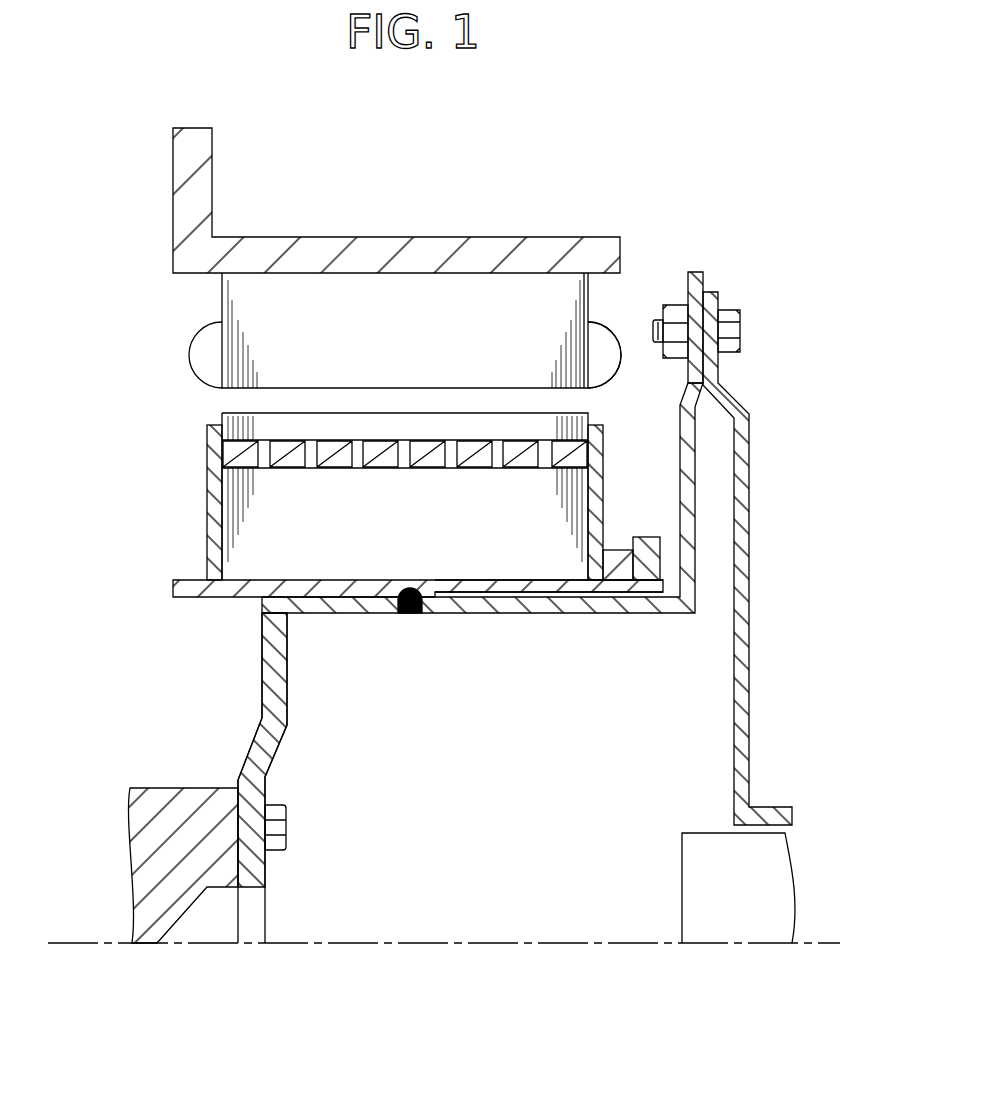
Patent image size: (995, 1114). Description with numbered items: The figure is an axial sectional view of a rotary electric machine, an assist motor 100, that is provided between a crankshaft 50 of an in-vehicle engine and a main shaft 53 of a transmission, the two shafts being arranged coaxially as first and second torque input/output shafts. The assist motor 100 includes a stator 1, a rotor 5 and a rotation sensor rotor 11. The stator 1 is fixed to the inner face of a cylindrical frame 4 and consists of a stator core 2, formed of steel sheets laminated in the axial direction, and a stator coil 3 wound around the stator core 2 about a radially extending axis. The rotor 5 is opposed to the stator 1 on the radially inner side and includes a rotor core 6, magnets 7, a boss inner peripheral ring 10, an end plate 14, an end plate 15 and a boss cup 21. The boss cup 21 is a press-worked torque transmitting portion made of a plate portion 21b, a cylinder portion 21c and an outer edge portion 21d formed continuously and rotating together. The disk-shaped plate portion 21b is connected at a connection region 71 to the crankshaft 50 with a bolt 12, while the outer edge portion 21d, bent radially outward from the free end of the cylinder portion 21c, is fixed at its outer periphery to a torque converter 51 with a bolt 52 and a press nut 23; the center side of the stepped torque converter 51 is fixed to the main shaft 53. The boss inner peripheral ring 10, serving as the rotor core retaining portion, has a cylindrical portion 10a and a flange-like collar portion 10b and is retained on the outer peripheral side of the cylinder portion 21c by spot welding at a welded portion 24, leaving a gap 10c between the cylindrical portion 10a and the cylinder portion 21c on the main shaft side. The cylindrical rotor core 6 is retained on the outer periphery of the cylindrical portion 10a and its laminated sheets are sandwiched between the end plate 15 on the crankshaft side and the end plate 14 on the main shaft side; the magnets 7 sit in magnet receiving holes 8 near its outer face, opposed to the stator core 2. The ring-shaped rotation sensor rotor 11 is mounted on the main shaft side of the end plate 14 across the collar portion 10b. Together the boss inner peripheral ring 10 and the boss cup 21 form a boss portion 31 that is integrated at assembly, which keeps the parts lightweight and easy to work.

The assist motor 100 is at (440, 524).
The stator 1 is at (508, 170).
The stator core 2 is at (522, 306).
The stator coil 3 is at (605, 346).
The frame 4 is at (294, 246).
The rotor 5 is at (183, 436).
The rotor core 6 is at (256, 553).
The magnets 7 is at (236, 458).
The magnet receiving holes 8 is at (347, 452).
The boss inner peripheral ring 10 is at (174, 589).
The cylindrical portion 10a is at (572, 586).
The collar portion 10b is at (613, 548).
The gap 10c is at (487, 594).
The rotation sensor rotor 11 is at (645, 553).
The bolt 12 is at (278, 826).
The end plate 14 is at (597, 452).
The end plate 15 is at (212, 510).
The boss cup 21 is at (262, 648).
The plate portion 21b is at (262, 716).
The cylinder portion 21c is at (655, 615).
The outer edge portion 21d is at (700, 272).
The press nut 23 is at (677, 355).
The welded portion 24 is at (410, 616).
The boss portion 31 is at (100, 603).
The crankshaft 50 is at (160, 855).
The torque converter 51 is at (743, 685).
The bolt 52 is at (735, 330).
The main shaft 53 is at (697, 885).
The connection region 71 is at (238, 828).